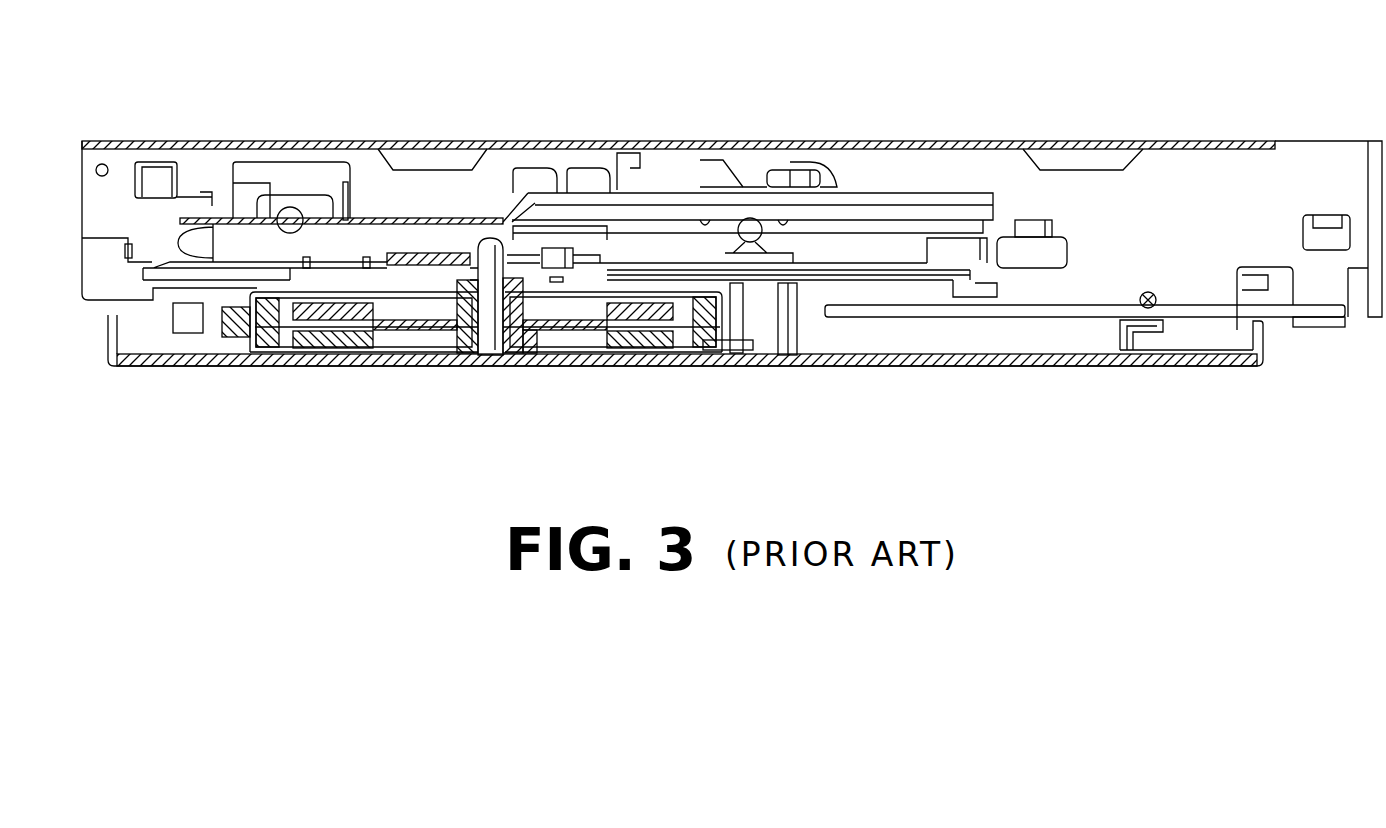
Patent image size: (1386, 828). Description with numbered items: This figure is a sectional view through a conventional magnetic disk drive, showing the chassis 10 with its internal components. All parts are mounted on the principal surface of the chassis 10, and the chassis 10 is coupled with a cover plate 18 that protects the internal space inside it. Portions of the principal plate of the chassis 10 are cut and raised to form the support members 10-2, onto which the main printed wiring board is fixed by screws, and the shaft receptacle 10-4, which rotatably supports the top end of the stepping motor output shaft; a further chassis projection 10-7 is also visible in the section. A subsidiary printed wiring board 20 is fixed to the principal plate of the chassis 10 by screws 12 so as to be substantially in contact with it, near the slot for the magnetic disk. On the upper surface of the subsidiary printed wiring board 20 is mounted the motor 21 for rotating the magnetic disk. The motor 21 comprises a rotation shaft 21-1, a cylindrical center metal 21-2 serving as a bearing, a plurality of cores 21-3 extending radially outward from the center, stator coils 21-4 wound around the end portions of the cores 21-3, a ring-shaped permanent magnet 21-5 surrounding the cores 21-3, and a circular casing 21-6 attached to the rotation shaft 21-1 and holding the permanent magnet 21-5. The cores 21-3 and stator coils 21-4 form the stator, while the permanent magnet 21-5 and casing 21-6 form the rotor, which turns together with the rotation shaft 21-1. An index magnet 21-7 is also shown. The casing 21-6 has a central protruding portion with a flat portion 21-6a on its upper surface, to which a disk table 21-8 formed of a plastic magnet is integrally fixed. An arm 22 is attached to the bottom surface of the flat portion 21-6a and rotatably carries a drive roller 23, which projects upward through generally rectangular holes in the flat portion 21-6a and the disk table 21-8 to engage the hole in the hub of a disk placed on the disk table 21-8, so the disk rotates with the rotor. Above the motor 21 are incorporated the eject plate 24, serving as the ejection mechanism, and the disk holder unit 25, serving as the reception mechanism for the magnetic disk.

The chassis 10 is at (682, 368).
The support member 10-2 is at (1133, 340).
The shaft receptacle 10-4 is at (987, 318).
The projection of frame 10-7 is at (1052, 170).
The screw 12 is at (1147, 292).
The cover plate 18 is at (1077, 140).
The subsidiary printed wiring board 20 is at (733, 277).
The motor 21 is at (247, 327).
The rotation shaft 21-1 is at (490, 237).
The center metal 21-2 is at (443, 353).
The core 21-3 is at (312, 365).
The stator coil 21-4 is at (318, 335).
The ring-shaped permanent magnet 21-5 is at (255, 300).
The circular casing 21-6 is at (620, 282).
The flat portion 21-6a is at (356, 240).
The index magnet 21-7 is at (218, 300).
The disk table 21-8 is at (420, 280).
The arm 22 is at (543, 352).
The drive roller 23 is at (560, 247).
The eject plate 24 is at (800, 283).
The disk holder unit 25 is at (950, 192).